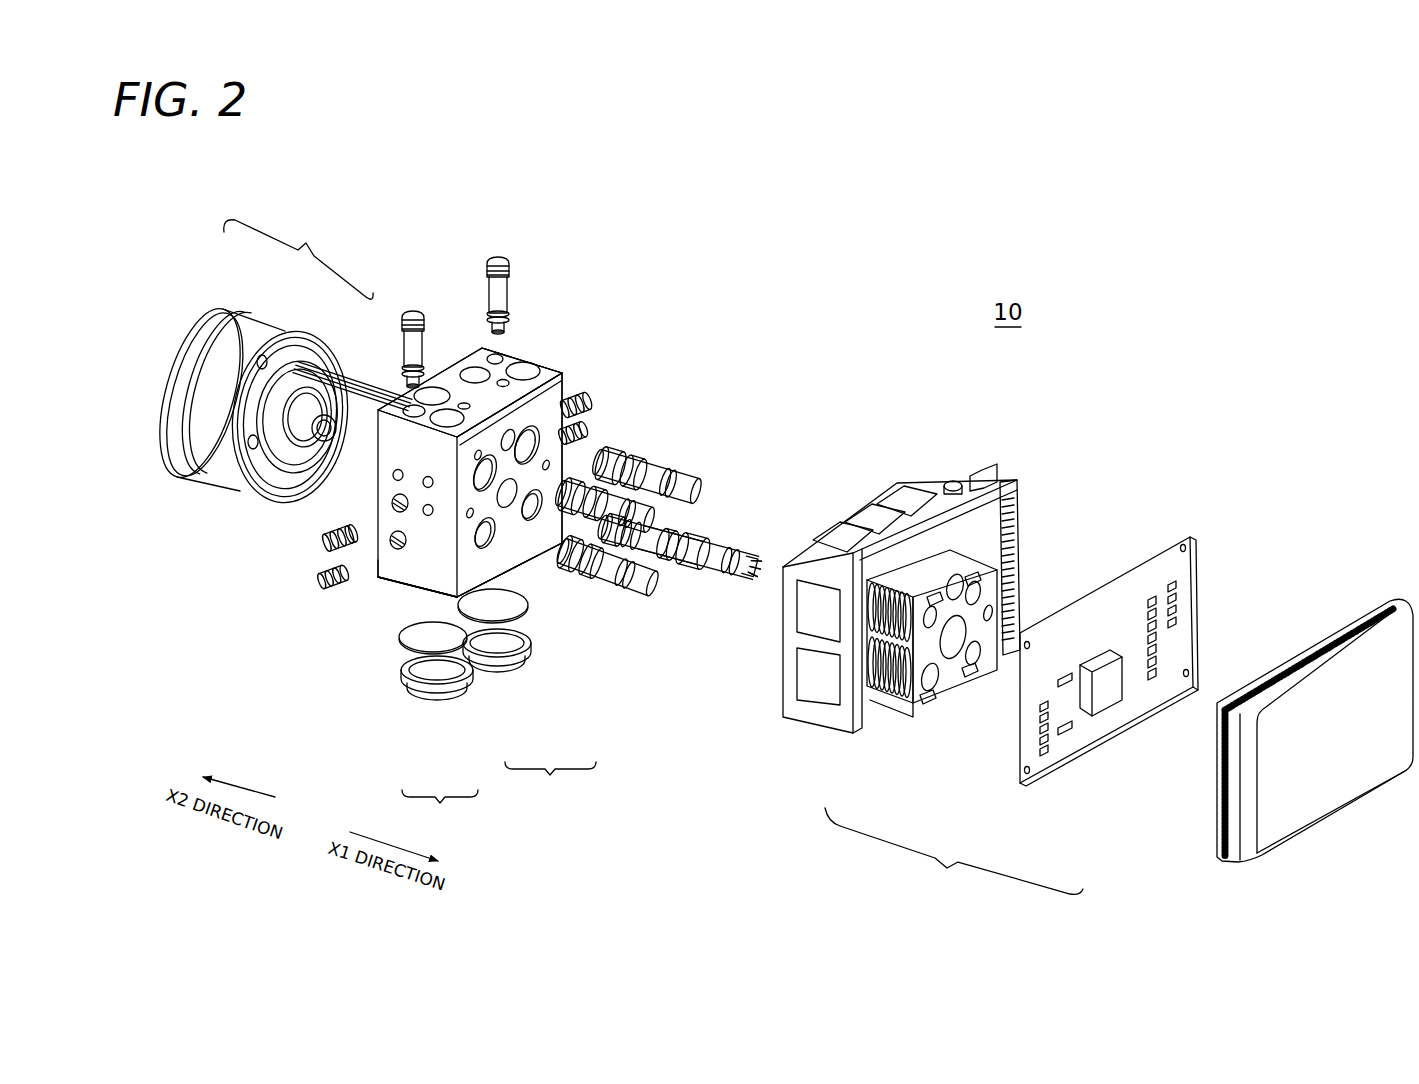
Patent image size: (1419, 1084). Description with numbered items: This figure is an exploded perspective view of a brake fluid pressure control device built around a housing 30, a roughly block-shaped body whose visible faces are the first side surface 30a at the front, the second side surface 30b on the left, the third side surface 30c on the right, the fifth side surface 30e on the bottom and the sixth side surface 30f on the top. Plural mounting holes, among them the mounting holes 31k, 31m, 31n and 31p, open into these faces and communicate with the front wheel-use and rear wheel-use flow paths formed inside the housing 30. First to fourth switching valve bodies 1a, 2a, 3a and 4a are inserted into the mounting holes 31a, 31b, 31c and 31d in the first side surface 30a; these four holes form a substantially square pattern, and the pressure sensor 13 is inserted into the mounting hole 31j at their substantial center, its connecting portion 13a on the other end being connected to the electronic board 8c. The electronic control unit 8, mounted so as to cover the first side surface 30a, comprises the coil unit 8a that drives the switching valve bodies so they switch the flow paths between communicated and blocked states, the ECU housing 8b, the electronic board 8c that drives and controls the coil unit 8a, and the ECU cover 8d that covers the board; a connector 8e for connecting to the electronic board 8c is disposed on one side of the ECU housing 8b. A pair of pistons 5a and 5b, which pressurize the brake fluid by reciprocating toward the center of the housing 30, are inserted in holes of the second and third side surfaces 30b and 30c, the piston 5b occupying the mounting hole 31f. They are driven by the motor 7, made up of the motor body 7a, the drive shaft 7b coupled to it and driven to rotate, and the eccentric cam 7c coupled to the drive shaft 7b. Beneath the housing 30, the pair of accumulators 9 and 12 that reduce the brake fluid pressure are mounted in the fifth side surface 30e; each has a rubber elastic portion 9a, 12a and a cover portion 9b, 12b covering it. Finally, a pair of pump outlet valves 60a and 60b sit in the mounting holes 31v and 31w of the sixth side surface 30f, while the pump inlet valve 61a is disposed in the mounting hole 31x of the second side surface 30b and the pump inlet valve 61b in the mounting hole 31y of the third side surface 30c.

The first switching valve body 1a is at (630, 450).
The second switching valve body 2a is at (628, 578).
The third switching valve body 3a is at (647, 475).
The fourth switching valve body 4a is at (653, 533).
The piston 5a is at (325, 545).
The piston 5b is at (589, 396).
The motor 7 is at (298, 255).
The motor body 7a is at (240, 347).
The drive shaft 7b is at (365, 378).
The eccentric cam 7c is at (307, 360).
The electronic control unit 8 is at (954, 858).
The coil unit 8a is at (932, 705).
The ECU housing 8b is at (840, 728).
The electronic board 8c is at (1013, 778).
The ECU cover 8d is at (1213, 830).
The connector 8e is at (973, 485).
The accumulator 9 is at (440, 814).
The elastic portion 9a is at (425, 641).
The cover portion 9b is at (448, 690).
The accumulator 12 is at (550, 784).
The elastic portion 12a is at (490, 616).
The cover portion 12b is at (515, 662).
The pressure sensor 13 is at (727, 540).
The connecting portion 13a is at (743, 578).
The housing 30 is at (487, 393).
The first side surface 30a is at (500, 555).
The second side surface 30b is at (415, 582).
The third side surface 30c is at (566, 337).
The fifth side surface 30e is at (389, 649).
The sixth side surface 30f is at (503, 362).
The mounting hole 31a is at (391, 503).
The mounting hole 31b is at (490, 522).
The mounting hole 31c is at (578, 420).
The mounting hole 31d is at (527, 512).
The mounting hole 31f is at (389, 540).
The mounting hole 31j is at (418, 578).
The mounting hole 31k is at (440, 388).
The mounting hole 31m is at (434, 425).
The mounting hole 31n is at (474, 367).
The mounting hole 31p is at (530, 363).
The mounting hole 31v is at (412, 404).
The mounting hole 31w is at (503, 380).
The mounting hole 31x is at (395, 595).
The mounting hole 31y is at (567, 452).
The pump outlet valve 60a is at (413, 311).
The pump outlet valve 60b is at (499, 257).
The pump inlet valve 61a is at (318, 585).
The pump inlet valve 61b is at (585, 435).